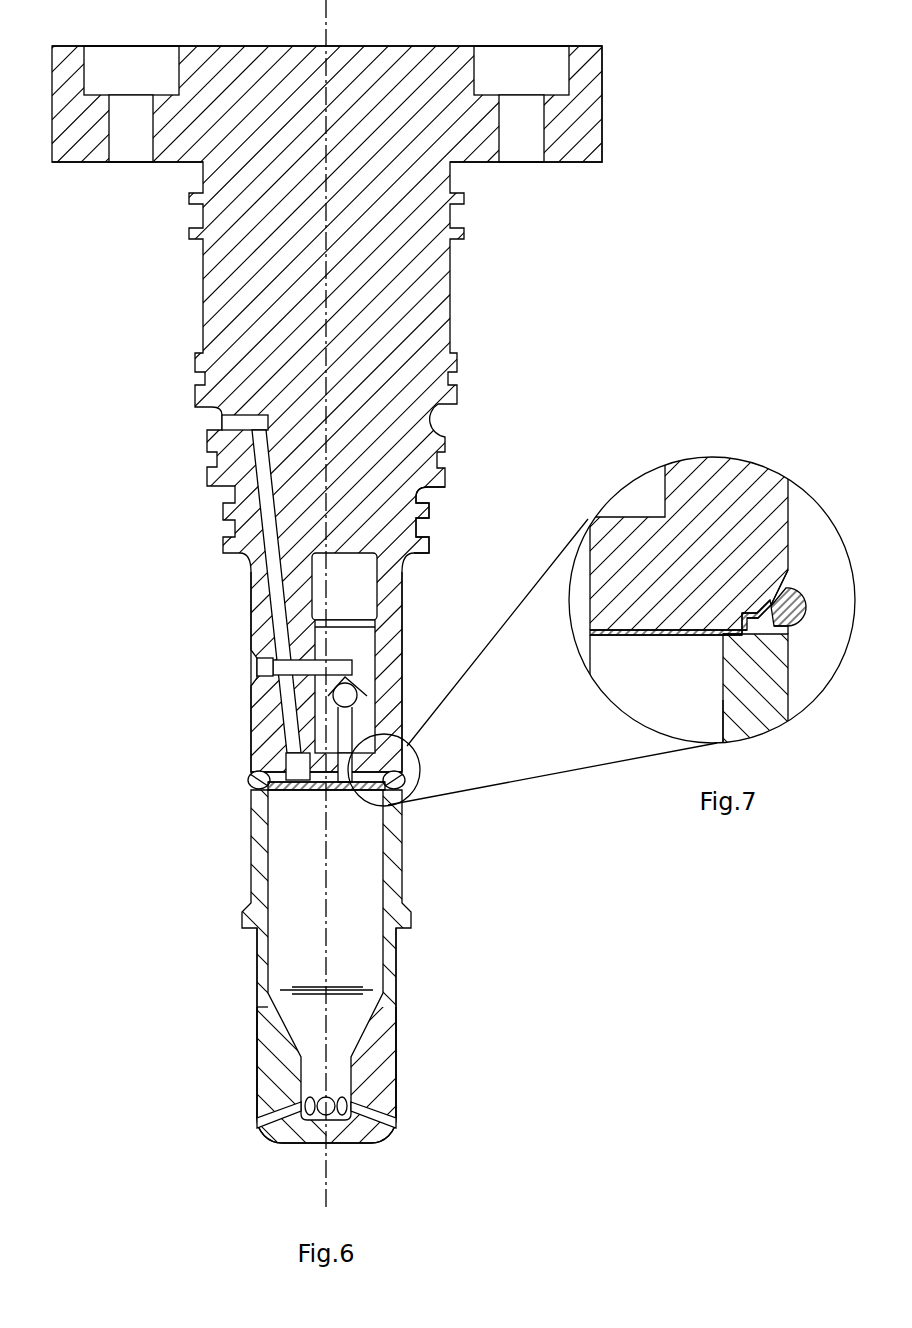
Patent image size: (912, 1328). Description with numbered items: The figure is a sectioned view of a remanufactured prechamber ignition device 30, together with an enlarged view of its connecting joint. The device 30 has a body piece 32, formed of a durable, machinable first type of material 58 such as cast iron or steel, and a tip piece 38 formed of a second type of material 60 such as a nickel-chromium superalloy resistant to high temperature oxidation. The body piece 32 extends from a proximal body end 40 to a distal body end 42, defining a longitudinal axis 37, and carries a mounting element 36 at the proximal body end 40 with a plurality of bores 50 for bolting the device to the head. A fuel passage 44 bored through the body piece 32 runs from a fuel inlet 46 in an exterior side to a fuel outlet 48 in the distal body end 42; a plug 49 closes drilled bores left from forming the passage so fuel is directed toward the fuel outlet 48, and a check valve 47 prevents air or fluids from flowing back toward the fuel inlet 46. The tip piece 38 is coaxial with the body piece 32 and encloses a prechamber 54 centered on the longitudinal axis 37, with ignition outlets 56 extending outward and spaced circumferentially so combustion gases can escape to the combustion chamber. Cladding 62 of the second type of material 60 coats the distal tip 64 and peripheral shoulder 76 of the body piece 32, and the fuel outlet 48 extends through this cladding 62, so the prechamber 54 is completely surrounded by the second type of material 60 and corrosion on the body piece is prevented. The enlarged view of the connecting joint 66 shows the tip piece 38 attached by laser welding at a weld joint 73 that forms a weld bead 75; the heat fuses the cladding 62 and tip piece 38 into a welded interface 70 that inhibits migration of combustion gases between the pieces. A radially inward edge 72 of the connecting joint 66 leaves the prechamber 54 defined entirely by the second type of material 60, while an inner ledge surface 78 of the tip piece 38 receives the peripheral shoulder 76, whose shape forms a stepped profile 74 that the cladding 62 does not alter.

In FIG. 6, the device 30 is at (456, 664).
In FIG. 7, the body piece 32 is at (790, 520).
In FIG. 6, the mounting element 36 is at (427, 62).
In FIG. 6, the longitudinal axis 37 is at (322, 12).
In FIG. 6, the tip piece 38 is at (398, 1020).
In FIG. 7, the tip piece 38 is at (792, 697).
In FIG. 6, the proximal body end 40 is at (456, 664).
In FIG. 6, the distal body end 42 is at (250, 757).
In FIG. 6, the fuel passage 44 is at (262, 590).
In FIG. 6, the fuel inlet 46 is at (216, 420).
In FIG. 6, the check valve 47 is at (366, 690).
In FIG. 6, the fuel outlet 48 is at (350, 784).
In FIG. 6, the plug 49 is at (252, 663).
In FIG. 6, the bores 50 is at (130, 152).
In FIG. 6, the prechamber 54 is at (392, 870).
In FIG. 7, the prechamber 54 is at (640, 705).
In FIG. 6, the ignition outlets 56 is at (270, 1098).
In FIG. 6, the first type of material 58 is at (422, 520).
In FIG. 6, the second type of material 60 is at (392, 960).
In FIG. 7, the second type of material 60 is at (770, 720).
In FIG. 6, the cladding 62 is at (318, 795).
In FIG. 7, the cladding 62 is at (612, 637).
In FIG. 6, the distal tip 64 is at (383, 796).
In FIG. 7, the distal tip 64 is at (592, 625).
In FIG. 6, the connecting joint 66 is at (420, 748).
In FIG. 7, the connecting joint 66 is at (852, 568).
In FIG. 7, the welded interface 70 is at (776, 600).
In FIG. 7, the radially inward edge 72 is at (722, 640).
In FIG. 7, the weld joint 73 is at (781, 588).
In FIG. 7, the stepped profile 74 is at (736, 600).
In FIG. 6, the weld bead 75 is at (248, 776).
In FIG. 7, the weld bead 75 is at (797, 612).
In FIG. 7, the peripheral shoulder 76 is at (742, 625).
In FIG. 7, the inner ledge surface 78 is at (782, 632).